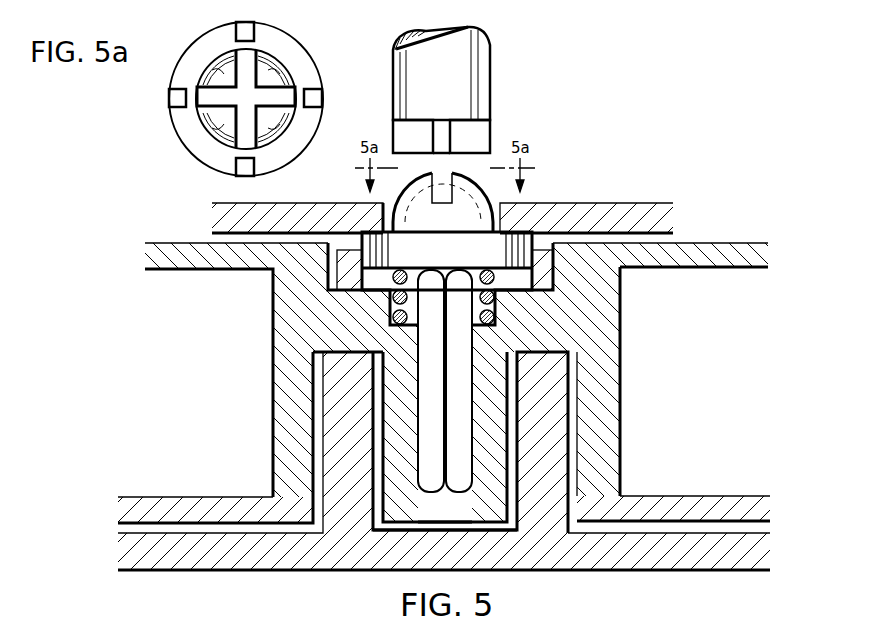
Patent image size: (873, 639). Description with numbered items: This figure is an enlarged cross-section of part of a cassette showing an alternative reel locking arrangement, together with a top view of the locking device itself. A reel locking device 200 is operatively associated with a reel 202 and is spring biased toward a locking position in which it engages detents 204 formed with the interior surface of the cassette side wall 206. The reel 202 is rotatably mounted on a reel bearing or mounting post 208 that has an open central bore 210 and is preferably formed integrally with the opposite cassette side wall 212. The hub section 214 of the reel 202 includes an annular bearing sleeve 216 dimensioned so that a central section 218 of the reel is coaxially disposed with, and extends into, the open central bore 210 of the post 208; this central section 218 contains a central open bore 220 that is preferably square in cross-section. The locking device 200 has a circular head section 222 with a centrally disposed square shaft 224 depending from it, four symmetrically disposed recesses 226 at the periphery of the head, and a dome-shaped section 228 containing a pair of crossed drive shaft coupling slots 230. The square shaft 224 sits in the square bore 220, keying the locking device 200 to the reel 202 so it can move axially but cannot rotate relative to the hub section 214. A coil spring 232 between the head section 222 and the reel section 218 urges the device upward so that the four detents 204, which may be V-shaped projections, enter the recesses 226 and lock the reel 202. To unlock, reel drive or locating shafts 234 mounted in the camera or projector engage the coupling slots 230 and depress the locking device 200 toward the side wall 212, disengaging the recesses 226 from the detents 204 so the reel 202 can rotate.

In FIG. 5, the reel locking device 200 is at (462, 167).
In FIG. 5, the reel 202 is at (712, 250).
In FIG. 5, the detents 204 is at (362, 233).
In FIG. 5, the cassette side wall 206 is at (620, 221).
In FIG. 5, the reel bearing or mounting post 208 is at (340, 503).
In FIG. 5, the open central bore 210 is at (517, 533).
In FIG. 5, the cassette side wall 212 is at (648, 562).
In FIG. 5, the hub section 214 is at (620, 356).
In FIG. 5, the annular bearing sleeve 216 is at (572, 437).
In FIG. 5, the central section 218 is at (494, 508).
In FIG. 5, the central open bore 220 is at (428, 508).
In FIG. 5a, the circular head section 222 is at (318, 48).
In FIG. 5, the circular head section 222 is at (441, 136).
In FIG. 5, the square shaft 224 is at (450, 483).
In FIG. 5a, the recesses 226 is at (236, 26).
In FIG. 5a, the dome-shaped section 228 is at (252, 76).
In FIG. 5a, the drive shaft coupling slots 230 is at (252, 72).
In FIG. 5, the coil spring 232 is at (402, 268).
In FIG. 5, the reel drive or locating shafts 234 is at (465, 46).